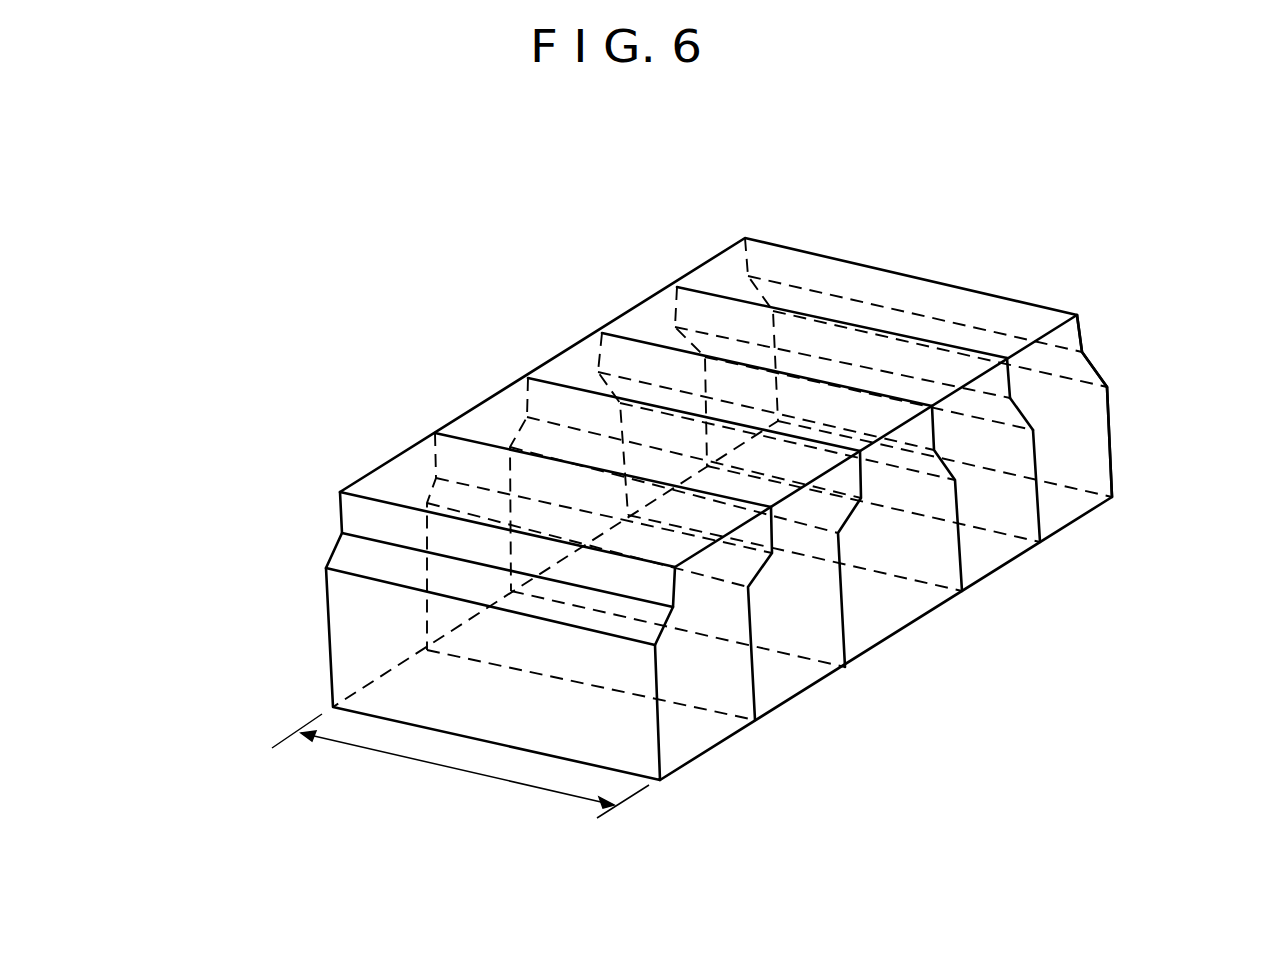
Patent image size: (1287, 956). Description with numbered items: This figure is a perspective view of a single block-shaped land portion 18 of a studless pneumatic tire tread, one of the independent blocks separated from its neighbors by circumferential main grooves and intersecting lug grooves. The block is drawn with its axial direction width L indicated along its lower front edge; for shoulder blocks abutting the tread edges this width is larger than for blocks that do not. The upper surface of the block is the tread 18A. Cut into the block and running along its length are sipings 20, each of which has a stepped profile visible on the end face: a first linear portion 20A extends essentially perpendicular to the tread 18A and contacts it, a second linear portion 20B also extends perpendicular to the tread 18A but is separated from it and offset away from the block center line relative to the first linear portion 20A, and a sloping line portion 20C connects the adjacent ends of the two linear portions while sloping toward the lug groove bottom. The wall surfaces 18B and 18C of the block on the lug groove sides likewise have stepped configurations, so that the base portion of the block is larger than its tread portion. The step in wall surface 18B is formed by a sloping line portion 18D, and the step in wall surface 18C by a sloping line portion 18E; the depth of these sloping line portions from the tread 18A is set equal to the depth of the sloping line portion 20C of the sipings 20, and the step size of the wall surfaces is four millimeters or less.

The block-shaped land portion 18 is at (795, 222).
The tread 18A is at (650, 318).
The wall surface 18B is at (1113, 423).
The wall surface 18C is at (343, 655).
The sloping line portion 18D is at (1093, 368).
The sloping line portion 18E is at (347, 550).
The siping 20 is at (840, 627).
The first linear portion 20A is at (1017, 380).
The second linear portion 20B is at (1038, 470).
The sloping line portion 20C is at (1024, 414).
The axial direction width L is at (448, 770).